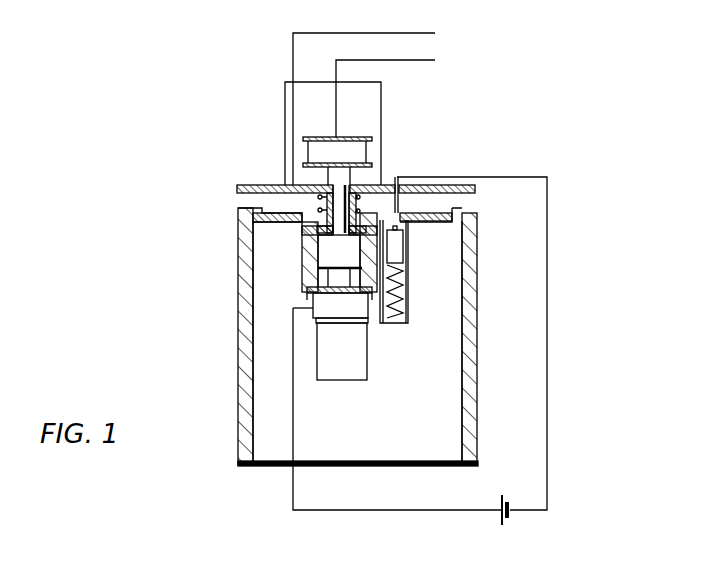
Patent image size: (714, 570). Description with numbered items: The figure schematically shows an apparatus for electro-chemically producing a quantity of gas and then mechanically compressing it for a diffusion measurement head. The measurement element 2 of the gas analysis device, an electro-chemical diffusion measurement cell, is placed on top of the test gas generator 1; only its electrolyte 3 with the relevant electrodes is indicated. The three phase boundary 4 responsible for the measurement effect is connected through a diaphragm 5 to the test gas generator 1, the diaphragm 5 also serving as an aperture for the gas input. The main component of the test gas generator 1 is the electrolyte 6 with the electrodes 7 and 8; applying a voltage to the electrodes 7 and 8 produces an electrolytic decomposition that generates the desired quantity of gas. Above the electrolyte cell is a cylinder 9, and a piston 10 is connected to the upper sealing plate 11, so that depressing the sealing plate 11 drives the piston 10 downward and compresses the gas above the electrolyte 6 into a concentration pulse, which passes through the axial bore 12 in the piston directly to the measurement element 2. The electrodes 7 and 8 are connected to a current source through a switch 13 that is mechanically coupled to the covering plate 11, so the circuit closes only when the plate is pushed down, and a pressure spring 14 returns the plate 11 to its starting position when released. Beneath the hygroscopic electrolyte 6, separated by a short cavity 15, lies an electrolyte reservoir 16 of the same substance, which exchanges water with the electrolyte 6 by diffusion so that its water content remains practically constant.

The test gas generator 1 is at (237, 360).
The measurement element 2 is at (284, 103).
The electrolyte 3 is at (315, 152).
The three phase boundary 4 is at (370, 165).
The diaphragm 5 is at (335, 173).
The electrolyte 6 is at (318, 314).
The electrode 7 is at (306, 295).
The electrode 8 is at (372, 300).
The cylinder 9 is at (312, 258).
The piston 10 is at (300, 232).
The sealing plate 11 is at (243, 184).
The axial bore 12 is at (322, 203).
The switch 13 is at (409, 290).
The pressure spring 14 is at (359, 201).
The cavity 15 is at (357, 323).
The electrolyte reservoir 16 is at (352, 368).